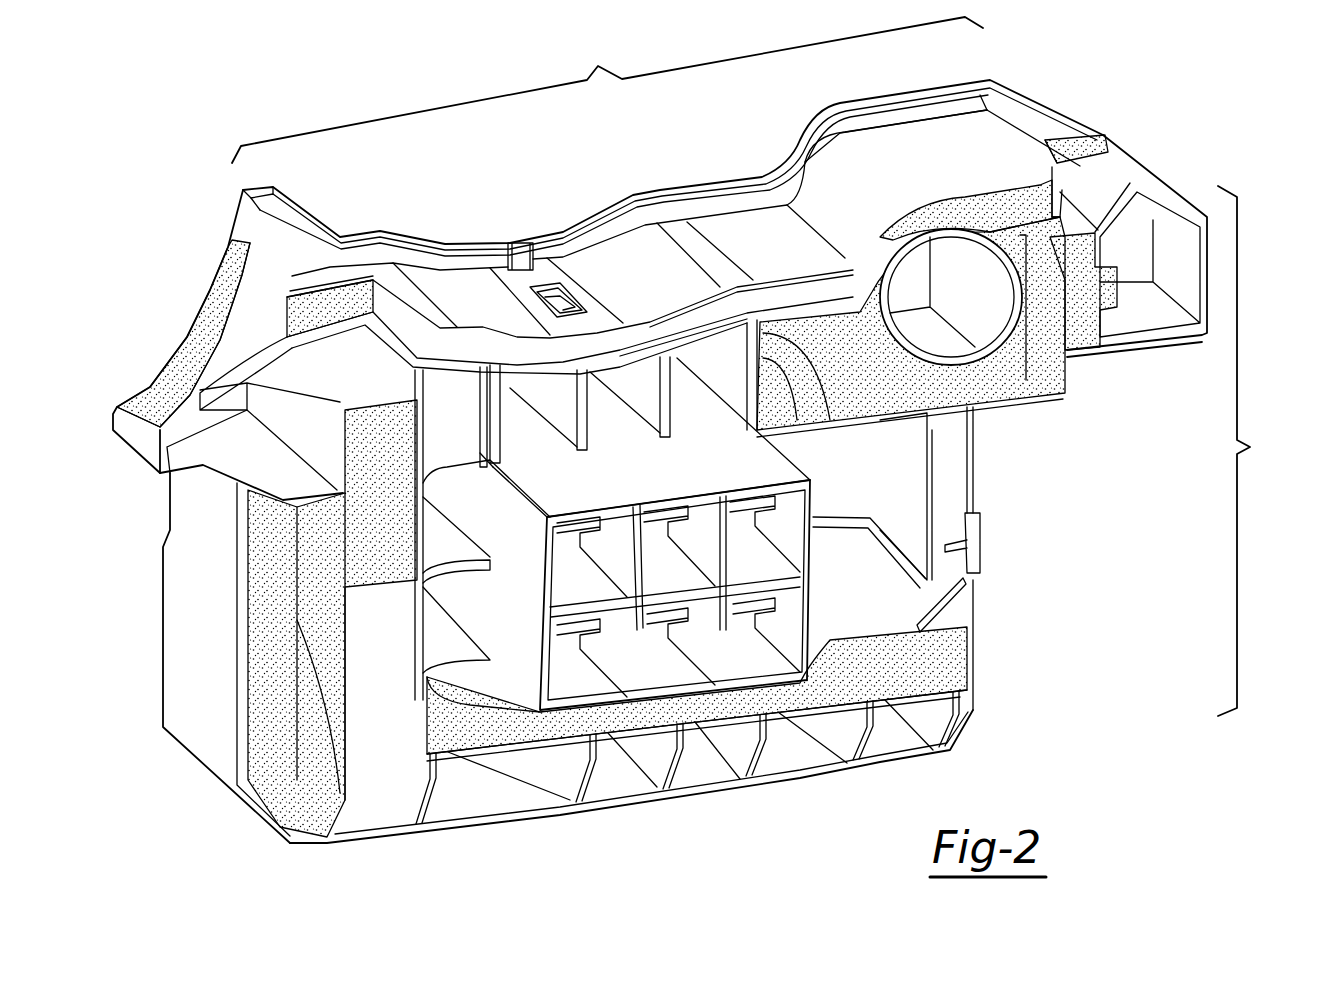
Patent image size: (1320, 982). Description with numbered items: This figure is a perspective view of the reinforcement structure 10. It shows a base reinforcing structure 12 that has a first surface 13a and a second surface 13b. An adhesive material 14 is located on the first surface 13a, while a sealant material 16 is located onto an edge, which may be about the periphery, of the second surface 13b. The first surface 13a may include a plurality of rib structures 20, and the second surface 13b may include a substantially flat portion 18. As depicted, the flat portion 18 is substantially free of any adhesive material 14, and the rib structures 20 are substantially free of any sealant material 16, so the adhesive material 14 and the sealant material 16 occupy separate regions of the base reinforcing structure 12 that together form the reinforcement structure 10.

The reinforcement structure 10 is at (660, 461).
The base reinforcing structure 12 is at (639, 479).
The first surface 13a is at (1254, 451).
The second surface 13b is at (607, 90).
The adhesive material 14 is at (1017, 365).
The sealant material 16 is at (253, 327).
The flat portion 18 is at (908, 172).
The rib structures 20 is at (487, 793).